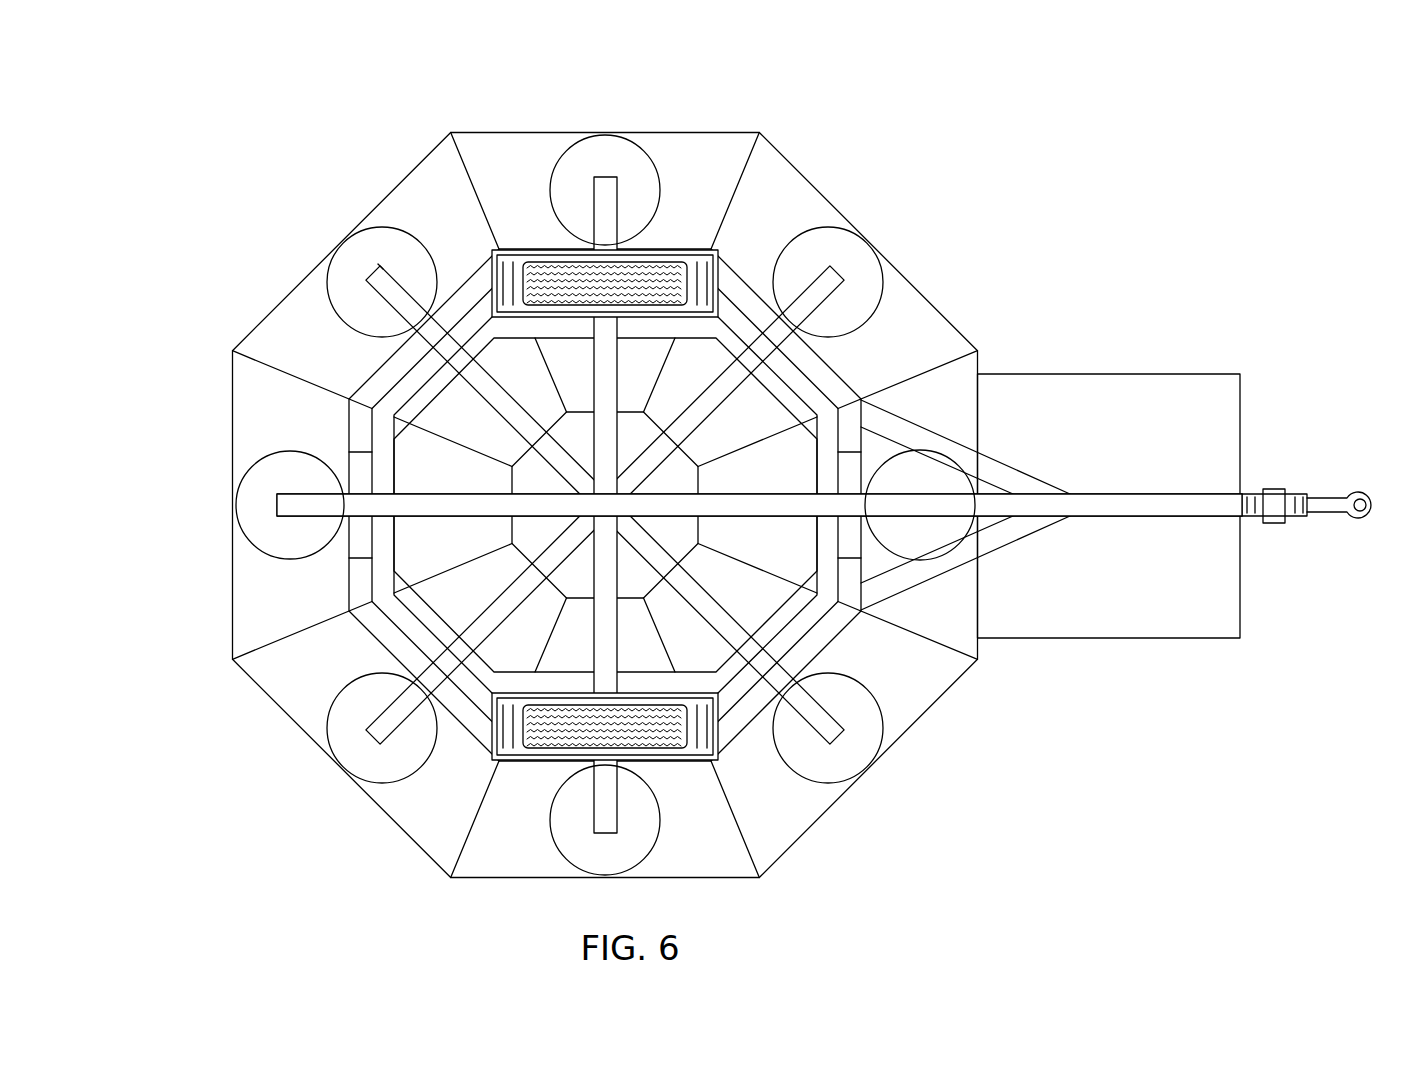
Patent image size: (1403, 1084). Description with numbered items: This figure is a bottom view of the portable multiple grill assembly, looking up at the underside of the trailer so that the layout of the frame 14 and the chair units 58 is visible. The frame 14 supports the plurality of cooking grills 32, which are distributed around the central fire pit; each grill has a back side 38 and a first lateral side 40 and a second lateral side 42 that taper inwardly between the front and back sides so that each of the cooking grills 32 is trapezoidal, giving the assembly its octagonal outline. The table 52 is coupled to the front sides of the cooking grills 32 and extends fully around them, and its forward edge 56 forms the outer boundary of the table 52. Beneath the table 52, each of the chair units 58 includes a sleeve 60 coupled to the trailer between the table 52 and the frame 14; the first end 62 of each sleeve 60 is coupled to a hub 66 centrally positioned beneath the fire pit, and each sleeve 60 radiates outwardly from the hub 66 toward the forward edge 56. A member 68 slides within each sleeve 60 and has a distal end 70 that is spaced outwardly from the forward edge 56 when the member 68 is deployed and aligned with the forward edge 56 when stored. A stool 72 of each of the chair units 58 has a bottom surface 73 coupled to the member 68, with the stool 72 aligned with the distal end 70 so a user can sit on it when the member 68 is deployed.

The frame 14 is at (915, 497).
The cooking grills 32 is at (568, 652).
The back side 38 is at (660, 400).
The first lateral side 40 is at (875, 345).
The second lateral side 42 is at (815, 560).
The table 52 is at (265, 416).
The forward edge 56 is at (283, 300).
The chair units 58 is at (550, 158).
The sleeve 60 is at (745, 690).
The first end 62 is at (862, 612).
The hub 66 is at (597, 490).
The member 68 is at (397, 290).
The distal end 70 is at (353, 230).
The stool 72 is at (650, 165).
The bottom surface 73 is at (828, 257).